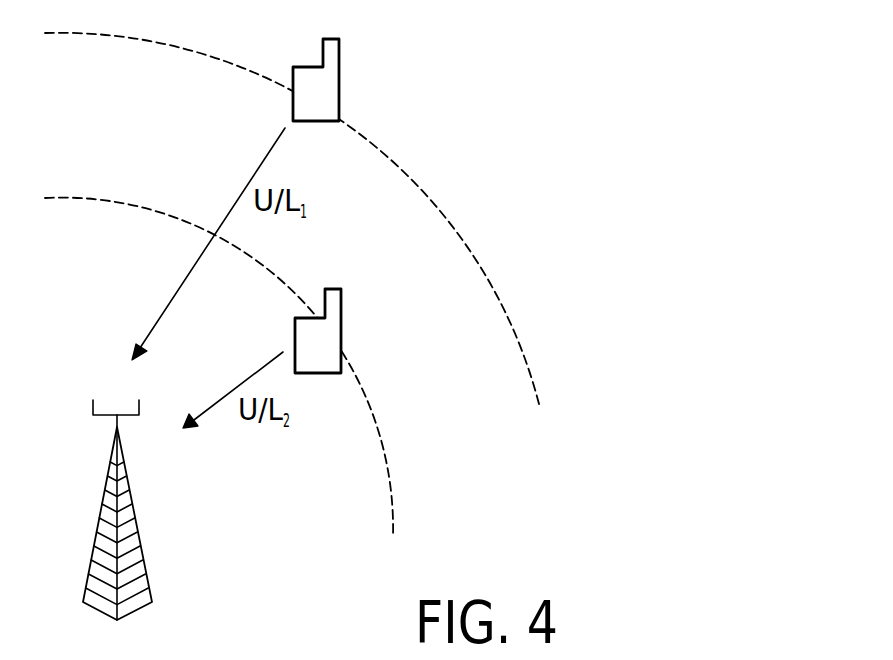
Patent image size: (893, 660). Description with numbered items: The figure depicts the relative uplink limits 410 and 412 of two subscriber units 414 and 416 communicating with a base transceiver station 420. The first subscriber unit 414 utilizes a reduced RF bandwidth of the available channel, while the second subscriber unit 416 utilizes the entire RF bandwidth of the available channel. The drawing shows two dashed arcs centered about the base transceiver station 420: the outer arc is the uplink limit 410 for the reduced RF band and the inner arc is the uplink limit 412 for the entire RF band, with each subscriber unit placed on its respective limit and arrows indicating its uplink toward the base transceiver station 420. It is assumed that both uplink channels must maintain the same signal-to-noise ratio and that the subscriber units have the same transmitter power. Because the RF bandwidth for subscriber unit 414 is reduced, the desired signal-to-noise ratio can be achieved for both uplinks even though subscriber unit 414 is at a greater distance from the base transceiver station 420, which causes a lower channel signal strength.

The uplink limit 410 is at (487, 282).
The uplink limit 412 is at (382, 446).
The subscriber unit 414 is at (339, 80).
The subscriber unit 416 is at (341, 330).
The base transceiver station 420 is at (138, 517).